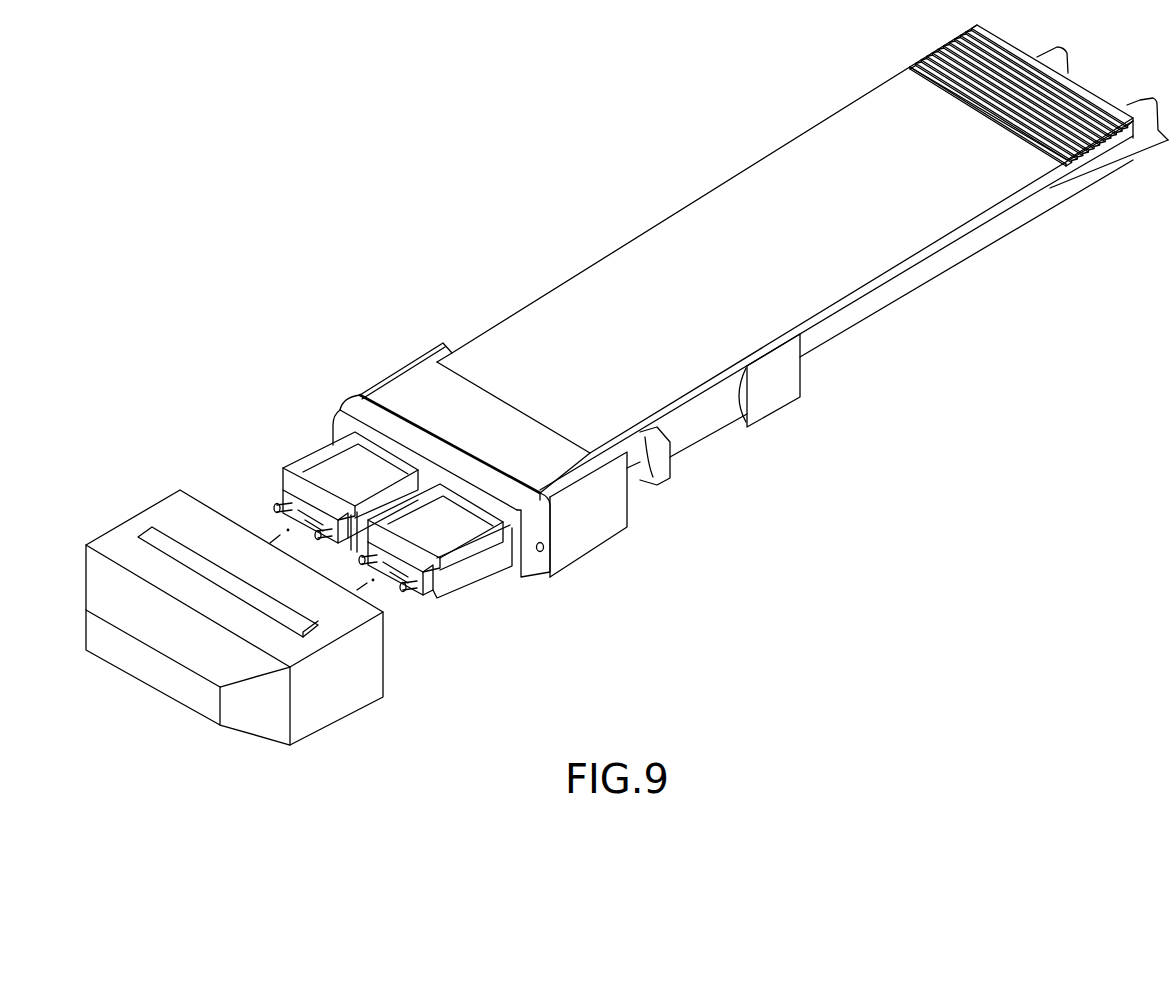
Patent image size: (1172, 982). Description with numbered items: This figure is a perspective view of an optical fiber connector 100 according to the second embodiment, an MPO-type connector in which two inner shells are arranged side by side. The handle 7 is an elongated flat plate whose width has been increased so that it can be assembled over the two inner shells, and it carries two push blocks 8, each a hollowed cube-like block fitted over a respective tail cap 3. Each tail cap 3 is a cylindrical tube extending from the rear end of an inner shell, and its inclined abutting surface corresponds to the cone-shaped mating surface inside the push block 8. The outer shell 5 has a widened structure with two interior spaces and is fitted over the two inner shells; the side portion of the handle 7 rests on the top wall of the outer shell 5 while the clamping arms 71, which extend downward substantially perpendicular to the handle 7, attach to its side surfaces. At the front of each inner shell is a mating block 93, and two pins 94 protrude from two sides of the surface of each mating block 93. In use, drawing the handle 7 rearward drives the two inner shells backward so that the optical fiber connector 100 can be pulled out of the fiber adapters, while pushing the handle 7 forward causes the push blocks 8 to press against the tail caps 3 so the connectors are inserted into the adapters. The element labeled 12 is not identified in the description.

The optical fiber connector 100 is at (441, 253).
The tail cap 3 is at (697, 425).
The outer shell 5 is at (382, 418).
The handle 7 is at (680, 240).
The push block 8 is at (777, 385).
The dust cap 12 is at (173, 512).
The clamping arm 71 is at (587, 523).
The mating block 93 is at (310, 457).
The pin 94 is at (402, 590).